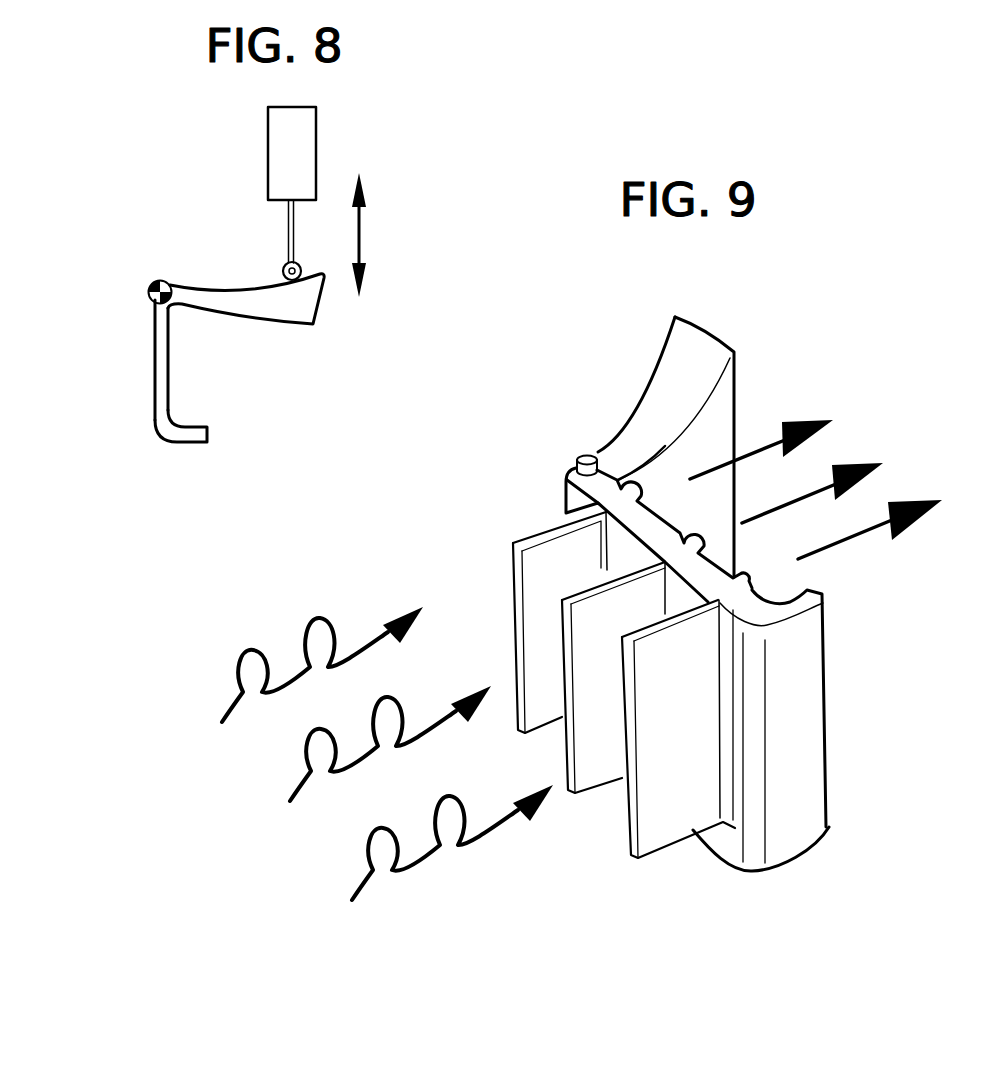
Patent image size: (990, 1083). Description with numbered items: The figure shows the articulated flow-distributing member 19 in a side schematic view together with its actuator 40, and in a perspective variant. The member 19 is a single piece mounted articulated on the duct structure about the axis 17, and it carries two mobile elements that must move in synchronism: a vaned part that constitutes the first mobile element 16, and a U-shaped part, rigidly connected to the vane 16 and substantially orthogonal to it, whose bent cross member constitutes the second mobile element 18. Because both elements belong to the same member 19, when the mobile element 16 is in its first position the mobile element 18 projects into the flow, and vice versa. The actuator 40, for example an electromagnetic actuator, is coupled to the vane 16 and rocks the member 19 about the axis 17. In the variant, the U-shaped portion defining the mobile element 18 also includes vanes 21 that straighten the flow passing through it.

In FIG. 8, the mobile element 16 is at (308, 310).
In FIG. 9, the mobile element 16 is at (710, 348).
In FIG. 8, the axis 17 is at (148, 300).
In FIG. 8, the mobile element 18 is at (195, 440).
In FIG. 9, the mobile element 18 is at (812, 728).
In FIG. 8, the member 19 is at (138, 354).
In FIG. 9, the member 19 is at (540, 442).
In FIG. 9, the vanes 21 is at (513, 597).
In FIG. 8, the actuator 40 is at (303, 138).